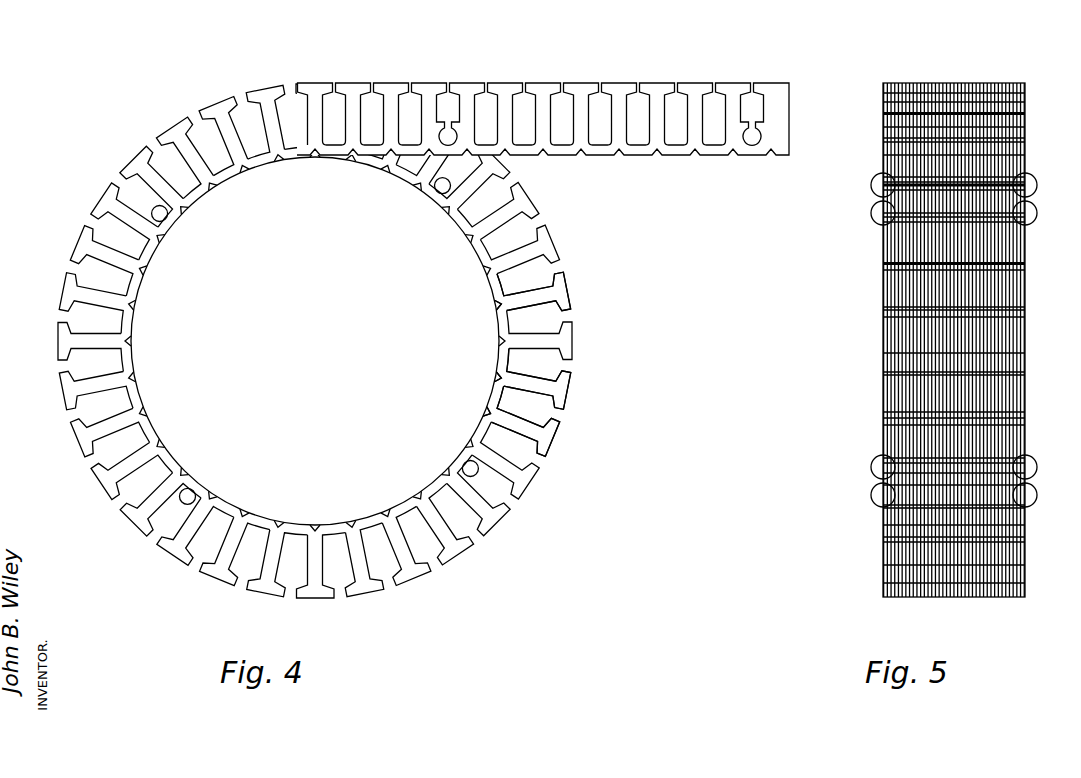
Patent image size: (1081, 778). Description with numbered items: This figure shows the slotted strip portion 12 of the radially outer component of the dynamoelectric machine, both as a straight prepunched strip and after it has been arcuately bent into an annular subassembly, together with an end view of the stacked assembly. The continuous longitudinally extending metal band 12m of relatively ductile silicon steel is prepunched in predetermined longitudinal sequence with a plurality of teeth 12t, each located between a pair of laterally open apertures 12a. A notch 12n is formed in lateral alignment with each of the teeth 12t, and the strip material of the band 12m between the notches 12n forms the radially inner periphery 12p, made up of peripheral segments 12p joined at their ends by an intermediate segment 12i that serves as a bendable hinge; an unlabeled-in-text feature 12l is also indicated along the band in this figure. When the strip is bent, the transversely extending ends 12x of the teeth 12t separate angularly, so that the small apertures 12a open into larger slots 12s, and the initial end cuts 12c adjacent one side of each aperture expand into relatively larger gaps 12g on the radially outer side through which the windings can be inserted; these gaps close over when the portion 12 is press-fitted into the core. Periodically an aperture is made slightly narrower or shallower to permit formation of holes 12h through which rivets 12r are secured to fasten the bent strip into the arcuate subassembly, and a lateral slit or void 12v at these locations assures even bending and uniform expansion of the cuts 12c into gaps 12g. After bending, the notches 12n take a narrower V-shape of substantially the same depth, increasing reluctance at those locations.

In FIG. 5, the slotted strip portion 12 is at (884, 390).
In FIG. 4, the laterally open apertures 12a is at (672, 113).
In FIG. 4, the initial end cuts 12c is at (546, 108).
In FIG. 4, the gaps 12g is at (87, 222).
In FIG. 5, the gaps 12g is at (886, 267).
In FIG. 4, the holes 12h is at (446, 141).
In FIG. 4, the intermediate segment 12i is at (502, 398).
In FIG. 4, the joint line 12l is at (576, 152).
In FIG. 4, the metal band 12m is at (730, 83).
In FIG. 4, the notch 12n is at (130, 341).
In FIG. 4, the radially inner periphery 12p is at (498, 330).
In FIG. 4, the rivets 12r is at (165, 216).
In FIG. 5, the rivets 12r is at (1036, 207).
In FIG. 4, the slots 12s is at (290, 113).
In FIG. 4, the teeth 12t is at (183, 140).
In FIG. 5, the teeth 12t is at (1000, 290).
In FIG. 4, the lateral slit or void 12v is at (447, 123).
In FIG. 4, the transversely extending ends 12x is at (174, 125).